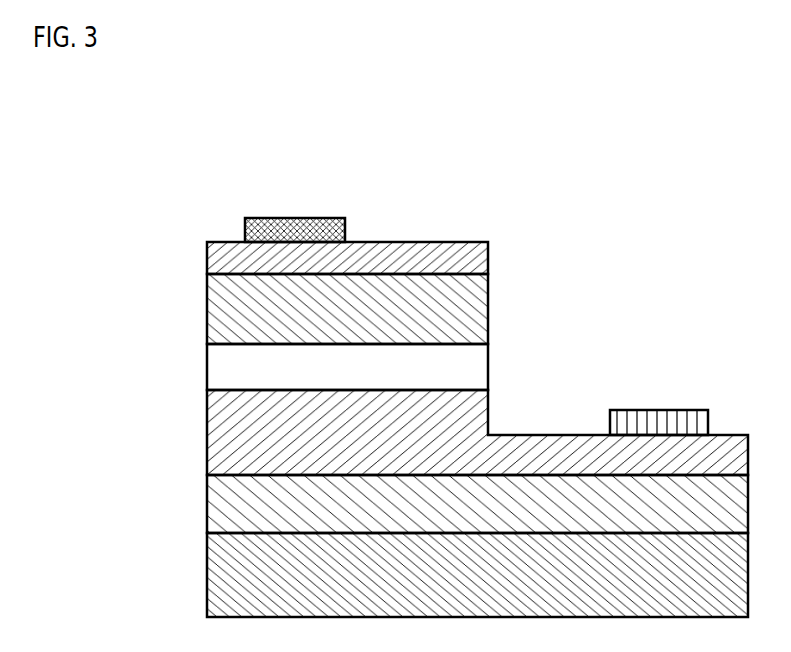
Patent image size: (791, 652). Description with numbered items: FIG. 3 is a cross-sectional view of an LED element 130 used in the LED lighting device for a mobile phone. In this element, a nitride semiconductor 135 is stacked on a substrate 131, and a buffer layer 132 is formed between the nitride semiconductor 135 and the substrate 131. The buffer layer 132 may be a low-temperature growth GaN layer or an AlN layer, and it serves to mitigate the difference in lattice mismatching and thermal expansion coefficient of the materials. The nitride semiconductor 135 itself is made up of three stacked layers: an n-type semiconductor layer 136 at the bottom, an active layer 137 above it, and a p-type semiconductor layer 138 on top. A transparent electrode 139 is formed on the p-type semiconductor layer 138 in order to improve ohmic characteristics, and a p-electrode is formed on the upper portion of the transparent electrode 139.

The light emitting device 130 is at (90, 121).
The substrate 131 is at (207, 584).
The buffer layer 132 is at (207, 509).
The nitride semiconductor 135 is at (113, 262).
The n-type semiconductor layer 136 is at (207, 437).
The active layer 137 is at (207, 370).
The p-type semiconductor layer 138 is at (207, 317).
The transparent electrode 139 is at (207, 262).